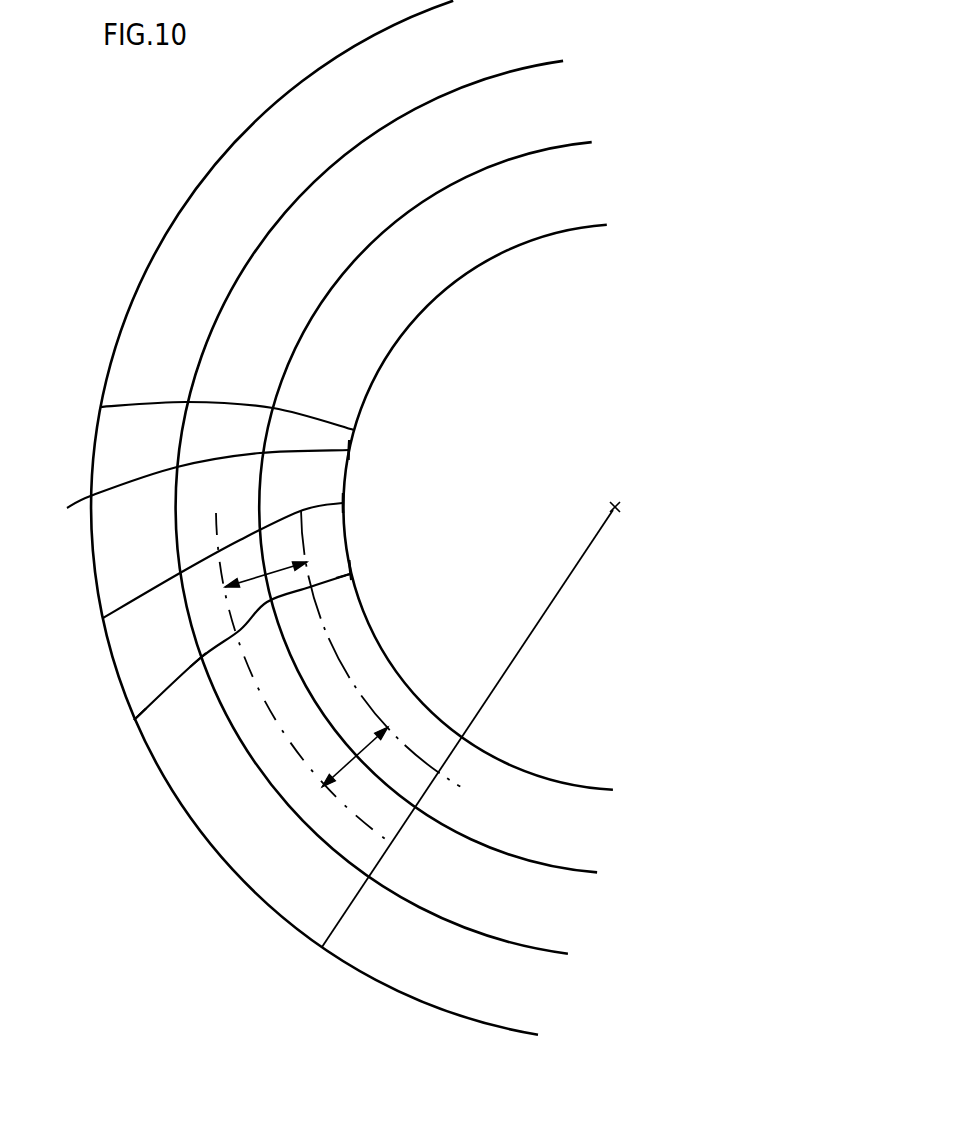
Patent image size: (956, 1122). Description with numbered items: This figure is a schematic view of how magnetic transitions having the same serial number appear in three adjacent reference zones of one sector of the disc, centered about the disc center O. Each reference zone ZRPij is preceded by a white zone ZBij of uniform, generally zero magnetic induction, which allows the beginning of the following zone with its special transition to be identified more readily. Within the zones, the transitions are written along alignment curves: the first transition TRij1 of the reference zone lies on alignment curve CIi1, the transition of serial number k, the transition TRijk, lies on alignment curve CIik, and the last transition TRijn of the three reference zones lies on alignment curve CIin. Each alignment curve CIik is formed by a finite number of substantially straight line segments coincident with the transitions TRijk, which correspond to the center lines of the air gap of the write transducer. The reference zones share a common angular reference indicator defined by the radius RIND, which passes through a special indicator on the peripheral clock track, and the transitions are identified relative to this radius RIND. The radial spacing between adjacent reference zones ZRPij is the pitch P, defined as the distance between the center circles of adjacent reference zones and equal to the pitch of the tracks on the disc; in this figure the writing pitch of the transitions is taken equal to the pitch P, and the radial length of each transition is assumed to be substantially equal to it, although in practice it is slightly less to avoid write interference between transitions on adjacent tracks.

The white zone ZBij is at (243, 420).
The transition of serial number 1 TRij1 is at (177, 467).
The transition of serial number k TRijk is at (187, 563).
The transition of serial number n TRijn is at (266, 614).
The alignment curve CIi1 is at (330, 452).
The alignment curve CIik is at (328, 505).
The alignment curve CIin is at (329, 567).
The reference zone ZRPij is at (241, 612).
The pitch between adjacent reference zones P is at (306, 667).
The radius of angular reference indicator RIND is at (376, 860).
The center of rotation O is at (623, 498).